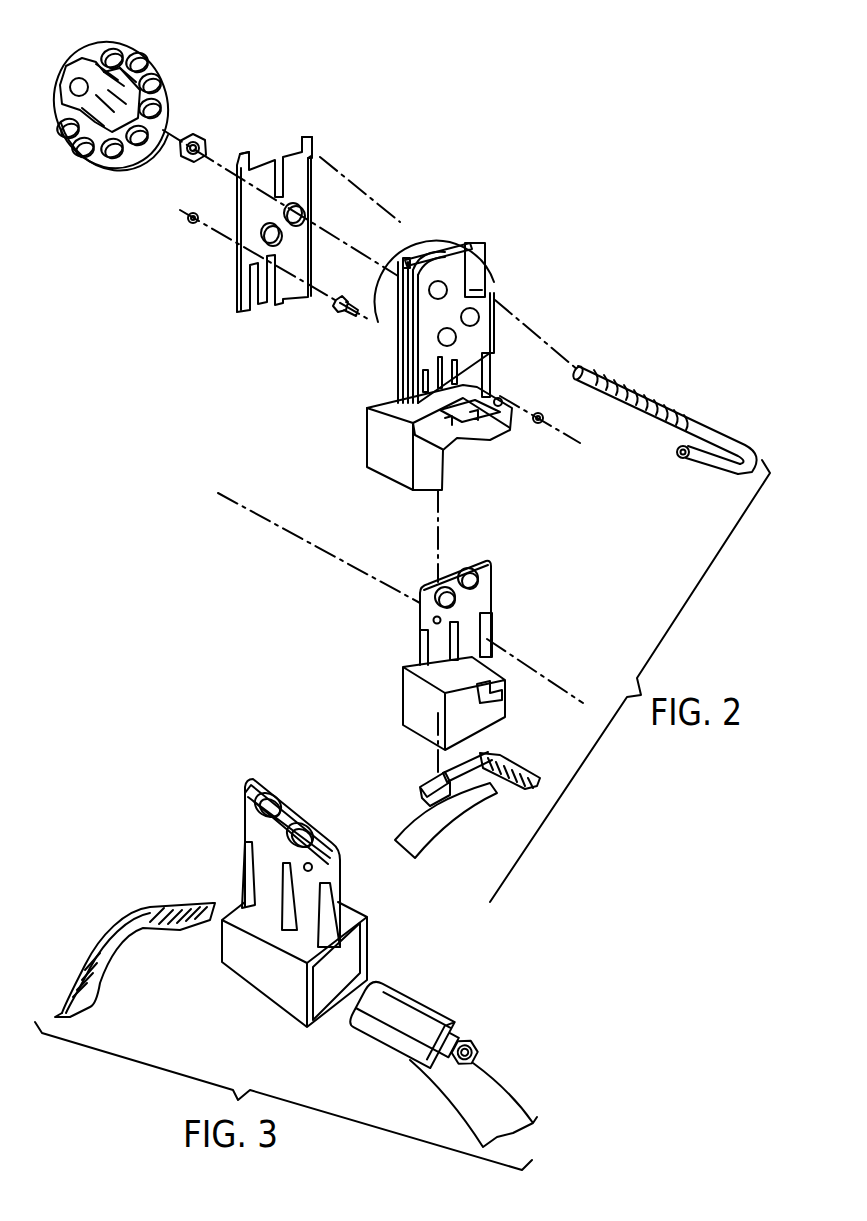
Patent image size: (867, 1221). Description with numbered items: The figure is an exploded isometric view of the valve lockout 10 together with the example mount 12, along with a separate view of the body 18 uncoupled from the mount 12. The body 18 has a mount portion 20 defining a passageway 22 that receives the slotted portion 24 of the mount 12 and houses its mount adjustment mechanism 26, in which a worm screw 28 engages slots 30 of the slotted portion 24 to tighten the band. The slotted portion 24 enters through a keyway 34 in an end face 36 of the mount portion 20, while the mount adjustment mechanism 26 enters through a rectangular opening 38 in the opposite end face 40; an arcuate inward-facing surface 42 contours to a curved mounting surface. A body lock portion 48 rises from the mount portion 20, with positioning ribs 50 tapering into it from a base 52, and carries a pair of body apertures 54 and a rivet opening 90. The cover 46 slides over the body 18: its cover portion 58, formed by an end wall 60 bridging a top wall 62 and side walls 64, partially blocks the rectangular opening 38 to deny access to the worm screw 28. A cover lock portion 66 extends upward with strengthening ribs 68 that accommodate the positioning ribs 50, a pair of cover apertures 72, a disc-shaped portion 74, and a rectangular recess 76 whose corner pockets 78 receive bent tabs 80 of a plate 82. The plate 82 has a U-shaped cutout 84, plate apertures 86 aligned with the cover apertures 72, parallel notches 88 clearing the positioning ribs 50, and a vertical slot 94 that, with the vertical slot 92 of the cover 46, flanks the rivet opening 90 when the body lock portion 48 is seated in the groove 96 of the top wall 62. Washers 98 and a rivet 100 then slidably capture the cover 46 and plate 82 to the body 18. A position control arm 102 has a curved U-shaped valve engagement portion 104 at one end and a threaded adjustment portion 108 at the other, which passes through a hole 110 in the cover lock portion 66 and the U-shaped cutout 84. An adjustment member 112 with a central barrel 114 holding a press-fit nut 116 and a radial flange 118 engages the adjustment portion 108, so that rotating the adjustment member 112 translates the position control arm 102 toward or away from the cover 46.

In FIG. 2, the lockout 10 is at (542, 234).
In FIG. 2, the mount 12 is at (463, 803).
In FIG. 3, the mount 12 is at (510, 1090).
In FIG. 2, the body 18 is at (454, 629).
In FIG. 3, the body 18 is at (314, 905).
In FIG. 2, the mount portion 20 is at (400, 705).
In FIG. 3, the mount portion 20 is at (329, 980).
In FIG. 2, the passageway 22 is at (512, 700).
In FIG. 3, the passageway 22 is at (325, 985).
In FIG. 2, the slotted portion 24 is at (520, 765).
In FIG. 3, the slotted portion 24 is at (135, 938).
In FIG. 2, the mount adjustment mechanism 26 is at (418, 783).
In FIG. 3, the mount adjustment mechanism 26 is at (445, 1020).
In FIG. 2, the worm screw 28 is at (420, 800).
In FIG. 3, the worm screw 28 is at (478, 1043).
In FIG. 2, the slots 30 is at (518, 782).
In FIG. 3, the slots 30 is at (178, 900).
In FIG. 2, the keyway 34 is at (490, 688).
In FIG. 2, the end face 36 is at (505, 690).
In FIG. 3, the rectangular opening 38 is at (366, 945).
In FIG. 3, the end face 40 is at (305, 1005).
In FIG. 2, the inward-facing surface 42 is at (475, 725).
In FIG. 2, the cover 46 is at (409, 452).
In FIG. 2, the body lock portion 48 is at (497, 565).
In FIG. 3, the body lock portion 48 is at (242, 812).
In FIG. 2, the positioning ribs 50 is at (418, 647).
In FIG. 3, the positioning ribs 50 is at (284, 885).
In FIG. 3, the base 52 is at (262, 925).
In FIG. 2, the body apertures 54 is at (469, 568).
In FIG. 3, the body apertures 54 is at (304, 822).
In FIG. 2, the cover portion 58 is at (365, 452).
In FIG. 2, the end wall 60 is at (402, 480).
In FIG. 2, the top wall 62 is at (485, 428).
In FIG. 2, the side walls 64 is at (438, 454).
In FIG. 2, the cover lock portion 66 is at (464, 283).
In FIG. 2, the strengthening ribs 68 is at (494, 378).
In FIG. 2, the cover apertures 72 is at (457, 337).
In FIG. 2, the disc-shaped portion 74 is at (455, 222).
In FIG. 2, the rectangular recess 76 is at (490, 283).
In FIG. 2, the pockets 78 is at (408, 258).
In FIG. 2, the bent tabs 80 is at (245, 152).
In FIG. 2, the plate 82 is at (237, 226).
In FIG. 2, the U-shaped cutout 84 is at (278, 192).
In FIG. 2, the plate apertures 86 is at (268, 222).
In FIG. 2, the parallel notches 88 is at (243, 292).
In FIG. 2, the rivet opening 90 is at (433, 618).
In FIG. 3, the rivet opening 90 is at (314, 864).
In FIG. 2, the vertical slot 92 is at (423, 378).
In FIG. 2, the vertical slot 94 is at (270, 300).
In FIG. 2, the groove 96 is at (190, 212).
In FIG. 2, the washers 98 is at (545, 415).
In FIG. 2, the rivet 100 is at (338, 296).
In FIG. 2, the position control arm 102 is at (663, 419).
In FIG. 2, the valve engagement portion 104 is at (689, 460).
In FIG. 2, the adjustment portion 108 is at (598, 370).
In FIG. 2, the hole 110 is at (480, 262).
In FIG. 2, the adjustment member 112 is at (132, 126).
In FIG. 2, the central barrel 114 is at (152, 83).
In FIG. 2, the nut 116 is at (200, 138).
In FIG. 2, the radial flange 118 is at (140, 57).